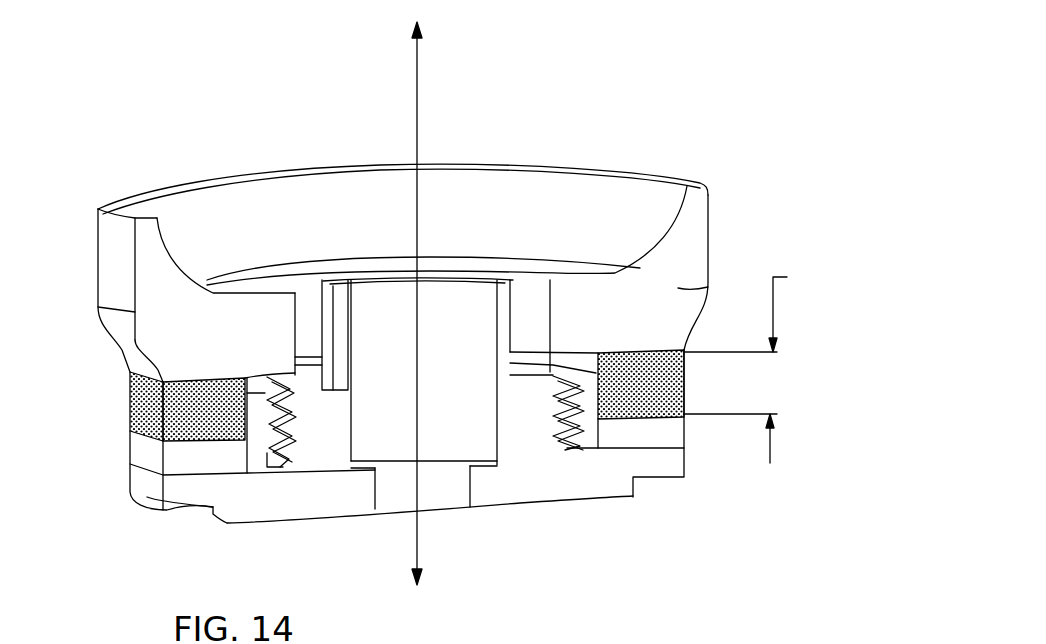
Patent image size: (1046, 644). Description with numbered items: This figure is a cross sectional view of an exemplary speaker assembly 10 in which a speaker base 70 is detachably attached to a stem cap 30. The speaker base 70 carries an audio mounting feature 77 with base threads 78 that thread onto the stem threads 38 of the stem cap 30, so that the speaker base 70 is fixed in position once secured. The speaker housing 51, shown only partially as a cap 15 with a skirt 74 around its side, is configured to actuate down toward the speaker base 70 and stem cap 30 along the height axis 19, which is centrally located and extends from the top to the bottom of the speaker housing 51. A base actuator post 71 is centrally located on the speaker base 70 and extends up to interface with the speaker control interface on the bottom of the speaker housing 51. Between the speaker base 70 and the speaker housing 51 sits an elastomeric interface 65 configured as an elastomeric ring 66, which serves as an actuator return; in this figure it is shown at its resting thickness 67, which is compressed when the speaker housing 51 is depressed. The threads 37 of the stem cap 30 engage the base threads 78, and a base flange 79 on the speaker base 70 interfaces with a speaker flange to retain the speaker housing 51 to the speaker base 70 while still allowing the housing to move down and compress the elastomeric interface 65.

The closure assembly 10 is at (177, 117).
The cap 15 is at (587, 195).
The height axis 19 is at (418, 88).
The stem cap 30 is at (496, 487).
The internal threads 37 is at (593, 450).
The stem threads 38 is at (602, 418).
The speaker housing 51 is at (652, 198).
The elastomeric interface 65 is at (667, 418).
The elastomeric ring 66 is at (228, 442).
The resting thickness 67 is at (755, 361).
The speaker base 70 is at (342, 298).
The base actuator post 71 is at (490, 288).
The skirt 74 is at (704, 290).
The audio mounting feature 77 is at (305, 450).
The base threads 78 is at (308, 430).
The base flange 79 is at (163, 495).